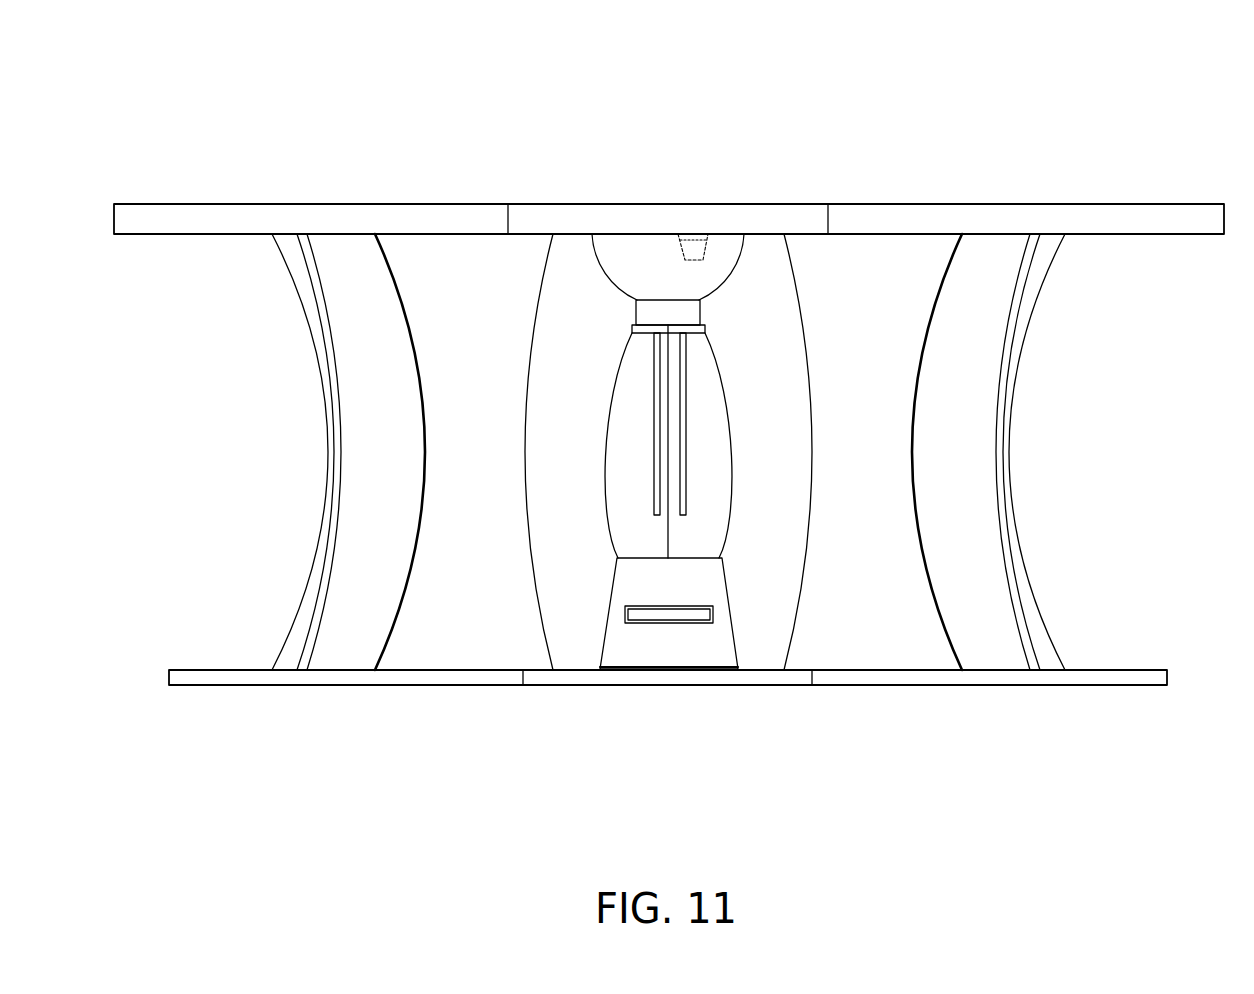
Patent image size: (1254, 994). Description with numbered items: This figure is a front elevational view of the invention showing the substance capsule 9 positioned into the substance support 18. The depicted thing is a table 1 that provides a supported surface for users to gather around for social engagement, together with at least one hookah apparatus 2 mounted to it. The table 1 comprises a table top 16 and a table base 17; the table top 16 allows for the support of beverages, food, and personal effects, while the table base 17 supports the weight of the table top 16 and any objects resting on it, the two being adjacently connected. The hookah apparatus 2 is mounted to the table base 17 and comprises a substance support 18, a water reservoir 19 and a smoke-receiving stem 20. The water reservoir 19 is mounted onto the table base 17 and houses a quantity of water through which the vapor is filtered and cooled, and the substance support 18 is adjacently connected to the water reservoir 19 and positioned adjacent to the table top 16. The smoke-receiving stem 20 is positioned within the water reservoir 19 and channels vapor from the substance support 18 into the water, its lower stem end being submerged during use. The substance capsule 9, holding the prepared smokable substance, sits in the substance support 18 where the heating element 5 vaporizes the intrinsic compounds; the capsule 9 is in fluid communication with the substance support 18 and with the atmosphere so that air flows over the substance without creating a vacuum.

The table 1 is at (368, 82).
The hookah apparatus 2 is at (718, 712).
The heating element 5 is at (704, 232).
The substance capsule 9 is at (704, 252).
The table top 16 is at (242, 212).
The table base 17 is at (328, 395).
The substance support 18 is at (643, 278).
The water reservoir 19 is at (718, 451).
The smoke-receiving stem 20 is at (680, 488).